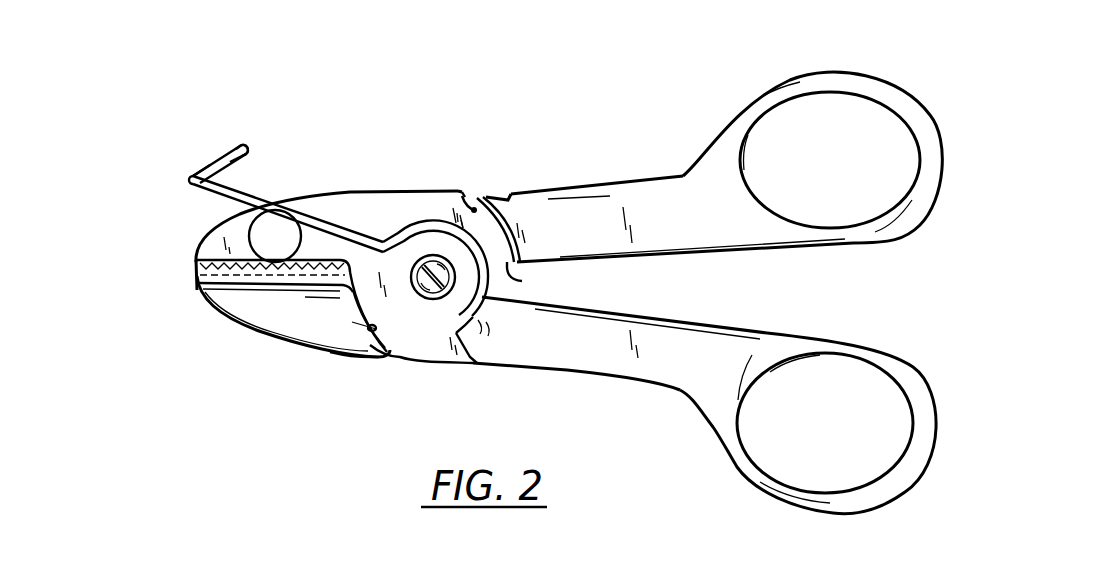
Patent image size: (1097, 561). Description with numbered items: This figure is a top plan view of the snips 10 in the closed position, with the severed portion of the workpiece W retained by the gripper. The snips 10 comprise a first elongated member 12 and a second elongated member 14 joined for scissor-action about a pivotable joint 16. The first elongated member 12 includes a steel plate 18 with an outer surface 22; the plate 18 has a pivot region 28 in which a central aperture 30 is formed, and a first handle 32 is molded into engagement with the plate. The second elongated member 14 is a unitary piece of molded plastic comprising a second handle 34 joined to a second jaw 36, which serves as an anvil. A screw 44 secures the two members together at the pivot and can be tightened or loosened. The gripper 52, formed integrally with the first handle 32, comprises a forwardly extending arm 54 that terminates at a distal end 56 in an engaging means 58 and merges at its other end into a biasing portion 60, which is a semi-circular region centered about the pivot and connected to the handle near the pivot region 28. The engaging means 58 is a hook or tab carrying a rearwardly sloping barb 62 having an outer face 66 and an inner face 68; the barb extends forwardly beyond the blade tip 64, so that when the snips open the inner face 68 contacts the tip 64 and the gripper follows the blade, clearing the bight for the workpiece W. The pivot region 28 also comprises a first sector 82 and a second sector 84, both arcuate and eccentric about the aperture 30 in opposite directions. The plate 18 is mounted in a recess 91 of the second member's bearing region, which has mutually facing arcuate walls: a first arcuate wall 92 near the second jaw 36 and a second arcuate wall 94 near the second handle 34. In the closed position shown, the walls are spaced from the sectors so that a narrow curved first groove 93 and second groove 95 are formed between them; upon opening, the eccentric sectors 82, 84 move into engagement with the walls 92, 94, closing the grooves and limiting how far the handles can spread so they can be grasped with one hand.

The snips 10 is at (298, 68).
The first elongated member 12 is at (662, 398).
The second elongated member 14 is at (621, 141).
The pivotable joint 16 is at (444, 328).
The steel plate 18 is at (204, 228).
The outer surface 22 is at (240, 240).
The pivot region 28 is at (458, 358).
The central aperture 30 is at (438, 262).
The first handle 32 is at (787, 305).
The second handle 34 is at (727, 132).
The second jaw 36 is at (252, 315).
The screw 44 is at (434, 300).
The gripper 52 is at (331, 208).
The forwardly extending arm 54 is at (248, 195).
The distal end 56 is at (190, 179).
The engaging means 58 is at (212, 146).
The biasing portion 60 is at (510, 194).
The barb 62 is at (240, 145).
The tip 64 is at (197, 259).
The outer face 66 is at (202, 163).
The inner face 68 is at (242, 157).
The first sector 82 is at (420, 354).
The second sector 84 is at (443, 194).
The recess 91 is at (392, 357).
The first arcuate wall 92 is at (352, 356).
The first groove 93 is at (351, 318).
The second arcuate wall 94 is at (468, 194).
The second groove 95 is at (522, 281).
The workpiece W is at (247, 224).